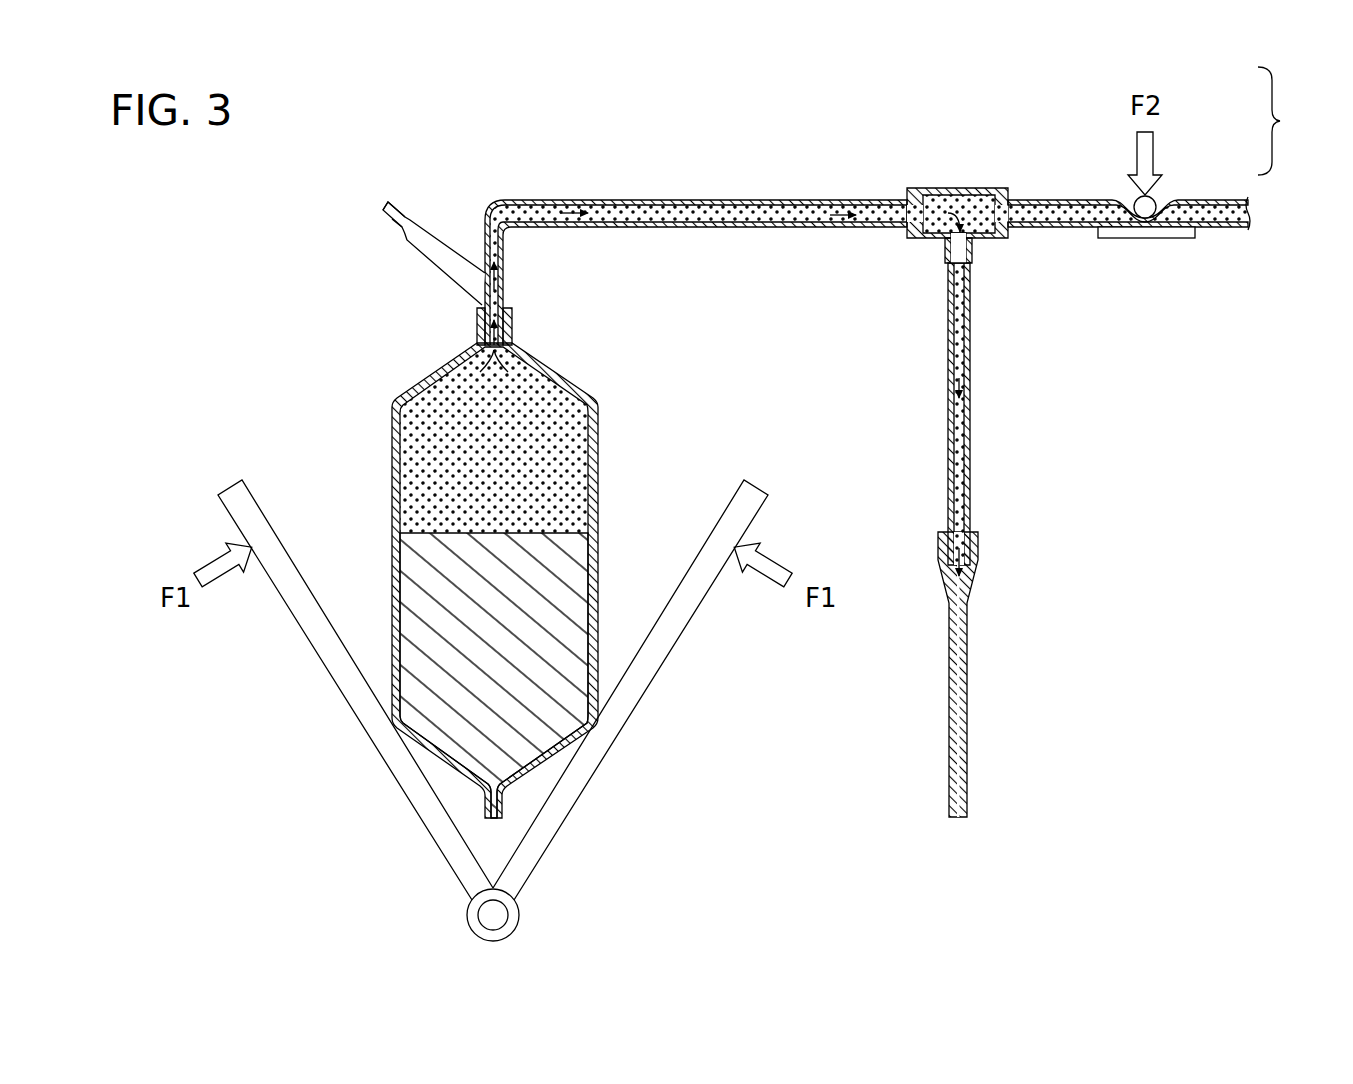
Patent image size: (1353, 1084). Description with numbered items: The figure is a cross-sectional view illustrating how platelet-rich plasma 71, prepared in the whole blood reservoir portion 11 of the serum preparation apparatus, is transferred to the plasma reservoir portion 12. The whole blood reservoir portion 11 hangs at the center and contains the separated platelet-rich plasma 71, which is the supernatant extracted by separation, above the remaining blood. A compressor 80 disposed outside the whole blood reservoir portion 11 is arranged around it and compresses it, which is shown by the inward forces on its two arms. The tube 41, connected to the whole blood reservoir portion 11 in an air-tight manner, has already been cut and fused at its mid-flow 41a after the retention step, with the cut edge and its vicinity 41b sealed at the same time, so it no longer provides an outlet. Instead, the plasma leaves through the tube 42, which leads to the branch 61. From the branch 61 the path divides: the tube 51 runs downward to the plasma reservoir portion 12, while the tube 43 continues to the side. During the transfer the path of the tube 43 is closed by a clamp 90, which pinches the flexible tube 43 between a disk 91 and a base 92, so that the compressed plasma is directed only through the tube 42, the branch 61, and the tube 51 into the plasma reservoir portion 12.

The whole blood reservoir portion 11 is at (581, 374).
The plasma reservoir portion 12 is at (978, 667).
The tube 41 is at (440, 255).
The mid-flow 41a is at (385, 206).
The cut edge and vicinity 41b is at (404, 199).
The tube 42 is at (663, 202).
The tube 43 is at (1058, 200).
The tube 51 is at (970, 430).
The branch 61 is at (957, 188).
The platelet-rich plasma 71 is at (558, 474).
The compressor 80 is at (567, 795).
The clamp 90 is at (1290, 121).
The disk 91 is at (1156, 198).
The base 92 is at (1172, 241).